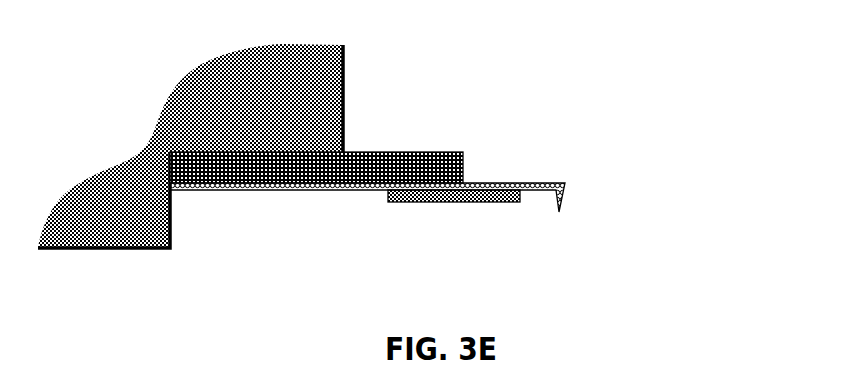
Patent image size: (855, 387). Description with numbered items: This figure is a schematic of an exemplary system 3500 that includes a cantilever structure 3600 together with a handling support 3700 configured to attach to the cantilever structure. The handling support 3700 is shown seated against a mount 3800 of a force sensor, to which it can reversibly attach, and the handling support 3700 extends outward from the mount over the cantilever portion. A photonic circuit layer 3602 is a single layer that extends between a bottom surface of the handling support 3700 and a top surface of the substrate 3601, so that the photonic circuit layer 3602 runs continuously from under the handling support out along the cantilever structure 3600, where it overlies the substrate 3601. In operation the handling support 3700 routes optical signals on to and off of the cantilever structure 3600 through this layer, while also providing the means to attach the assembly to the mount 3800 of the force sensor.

The system 3500 is at (524, 51).
The mount 3800 is at (190, 146).
The handling support 3700 is at (478, 148).
The cantilever structure 3600 is at (472, 251).
The photonic circuit layer 3602 is at (323, 199).
The substrate 3601 is at (461, 210).